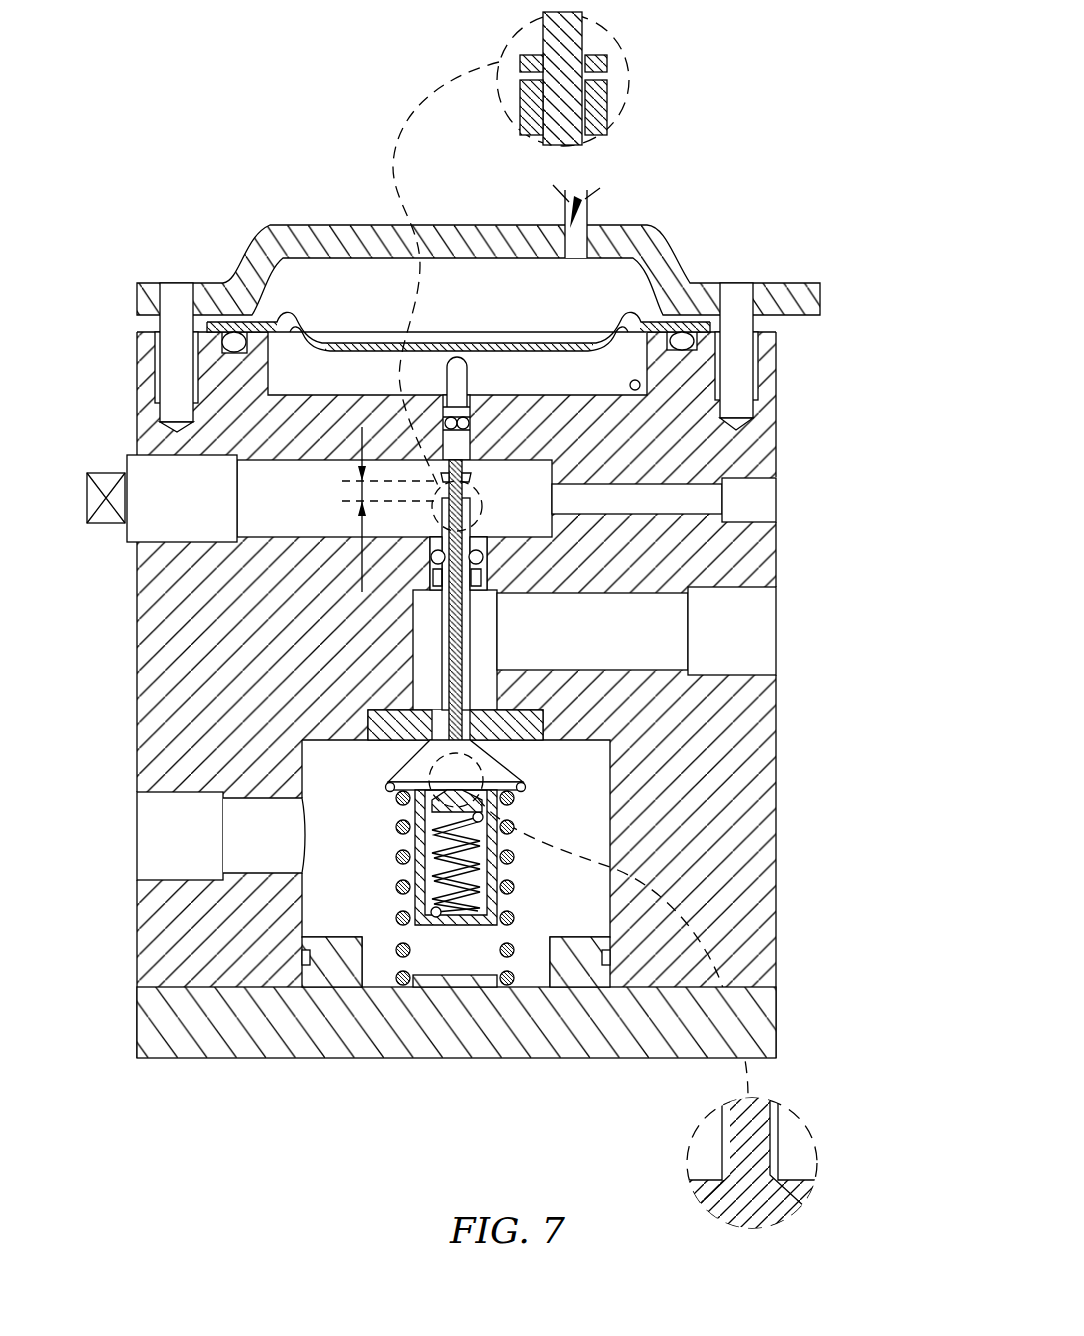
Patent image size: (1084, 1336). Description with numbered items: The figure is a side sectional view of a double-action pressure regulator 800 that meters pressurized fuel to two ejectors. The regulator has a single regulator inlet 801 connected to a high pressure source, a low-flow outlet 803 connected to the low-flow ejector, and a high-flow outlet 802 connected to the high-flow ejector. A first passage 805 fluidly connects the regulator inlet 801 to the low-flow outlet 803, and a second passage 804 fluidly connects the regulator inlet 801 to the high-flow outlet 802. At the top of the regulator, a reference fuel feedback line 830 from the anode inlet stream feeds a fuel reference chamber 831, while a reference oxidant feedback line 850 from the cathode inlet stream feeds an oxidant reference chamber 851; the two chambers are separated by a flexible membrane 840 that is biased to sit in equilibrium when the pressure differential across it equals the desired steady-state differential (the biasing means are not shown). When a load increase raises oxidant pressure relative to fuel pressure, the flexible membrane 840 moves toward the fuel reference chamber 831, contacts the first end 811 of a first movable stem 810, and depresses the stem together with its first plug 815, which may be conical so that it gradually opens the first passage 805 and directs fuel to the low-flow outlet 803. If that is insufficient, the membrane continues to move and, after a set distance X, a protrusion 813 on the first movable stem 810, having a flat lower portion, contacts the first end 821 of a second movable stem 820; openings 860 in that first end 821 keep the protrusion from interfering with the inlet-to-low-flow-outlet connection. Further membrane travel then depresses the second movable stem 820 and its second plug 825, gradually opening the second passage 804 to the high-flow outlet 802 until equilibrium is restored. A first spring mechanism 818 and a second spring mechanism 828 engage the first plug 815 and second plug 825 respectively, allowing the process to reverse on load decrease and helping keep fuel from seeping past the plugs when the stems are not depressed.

The double-action pressure regulator 800 is at (495, 624).
The regulator inlet 801 is at (137, 832).
The high-flow outlet 802 is at (776, 637).
The low-flow outlet 803 is at (776, 504).
The second passage 804 is at (545, 719).
The first passage 805 is at (772, 1167).
The first movable stem 810 is at (462, 633).
The first end of first movable stem 811 is at (457, 372).
The protrusion 813 is at (471, 479).
The first plug 815 is at (488, 805).
The first spring mechanism 818 is at (415, 873).
The second movable stem 820 is at (473, 697).
The first end of second movable stem 821 is at (471, 496).
The second plug 825 is at (513, 755).
The second spring mechanism 828 is at (385, 983).
The reference fuel feedback line 830 is at (650, 385).
The fuel reference chamber 831 is at (427, 367).
The flexible membrane 840 is at (358, 347).
The reference oxidant feedback line 850 is at (582, 198).
The oxidant reference chamber 851 is at (305, 290).
The openings 860 is at (607, 78).